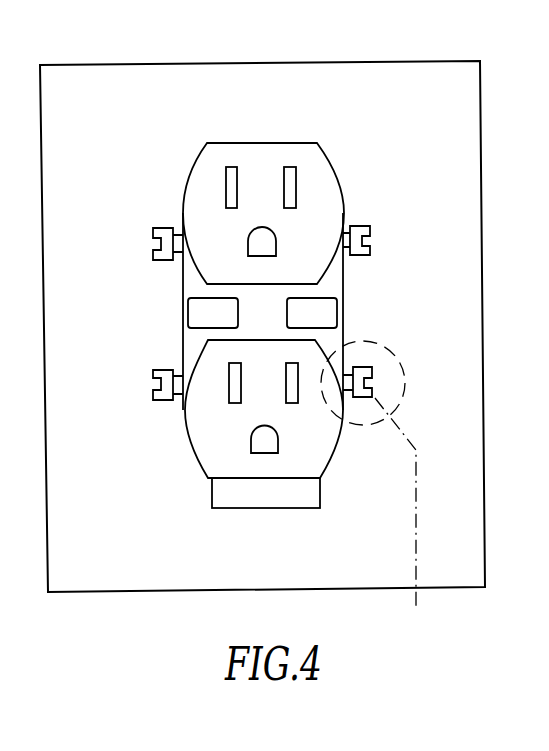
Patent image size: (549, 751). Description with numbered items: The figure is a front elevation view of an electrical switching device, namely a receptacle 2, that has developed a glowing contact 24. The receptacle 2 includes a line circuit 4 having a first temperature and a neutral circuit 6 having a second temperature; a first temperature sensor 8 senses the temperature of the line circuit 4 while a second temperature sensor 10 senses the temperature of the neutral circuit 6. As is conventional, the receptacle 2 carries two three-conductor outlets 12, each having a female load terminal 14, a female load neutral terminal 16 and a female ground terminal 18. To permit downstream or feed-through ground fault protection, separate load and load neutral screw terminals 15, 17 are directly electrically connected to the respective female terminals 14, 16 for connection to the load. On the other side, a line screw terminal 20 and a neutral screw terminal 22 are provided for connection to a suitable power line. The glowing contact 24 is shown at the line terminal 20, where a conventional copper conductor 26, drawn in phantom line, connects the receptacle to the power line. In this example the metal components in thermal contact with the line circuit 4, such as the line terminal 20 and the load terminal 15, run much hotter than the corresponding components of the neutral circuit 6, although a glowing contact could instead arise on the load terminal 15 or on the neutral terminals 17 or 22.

The receptacle 2 is at (384, 61).
The line circuit 4 is at (364, 170).
The neutral circuit 6 is at (157, 172).
The first temperature sensor (TS1) 8 is at (322, 318).
The second temperature sensor (TS2) 10 is at (188, 317).
The three-conductor outlet 12 is at (272, 515).
The female load terminal 14 is at (290, 208).
The load screw terminal 15 is at (363, 226).
The female load neutral terminal 16 is at (232, 210).
The load neutral screw terminal 17 is at (156, 260).
The female ground terminal 18 is at (247, 250).
The line screw terminal 20 is at (362, 397).
The neutral screw terminal 22 is at (160, 403).
The glowing contact 24 is at (411, 346).
The copper conductor 26 is at (415, 532).